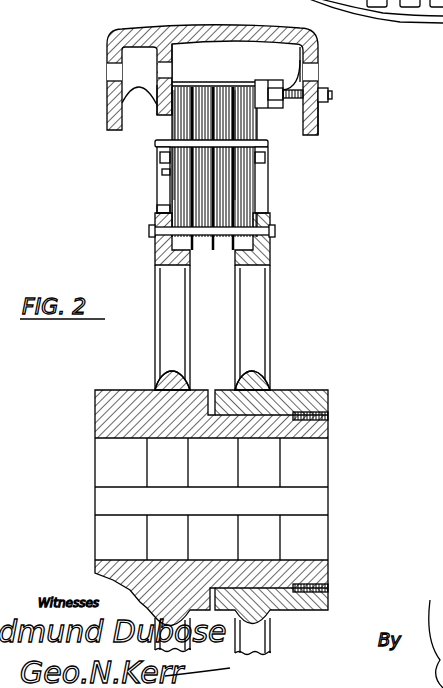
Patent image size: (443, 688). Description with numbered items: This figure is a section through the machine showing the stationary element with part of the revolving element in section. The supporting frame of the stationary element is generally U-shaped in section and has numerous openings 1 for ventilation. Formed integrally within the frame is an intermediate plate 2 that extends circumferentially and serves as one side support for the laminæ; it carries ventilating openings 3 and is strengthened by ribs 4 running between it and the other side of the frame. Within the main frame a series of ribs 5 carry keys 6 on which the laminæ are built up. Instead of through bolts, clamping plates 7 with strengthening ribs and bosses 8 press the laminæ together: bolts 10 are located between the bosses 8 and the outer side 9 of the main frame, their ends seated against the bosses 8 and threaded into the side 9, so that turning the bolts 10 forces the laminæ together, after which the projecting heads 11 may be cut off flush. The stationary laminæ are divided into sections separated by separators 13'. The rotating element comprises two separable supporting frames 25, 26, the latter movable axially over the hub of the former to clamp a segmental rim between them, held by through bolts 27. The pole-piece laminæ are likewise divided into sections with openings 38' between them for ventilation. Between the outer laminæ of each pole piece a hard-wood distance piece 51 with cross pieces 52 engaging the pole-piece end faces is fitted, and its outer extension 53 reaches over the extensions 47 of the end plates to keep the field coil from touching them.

The openings 1 is at (107, 72).
The intermediate plate 2 is at (160, 100).
The ventilating openings 3 is at (163, 70).
The ribs 4 is at (130, 80).
The ribs 5 is at (200, 44).
The keys 6 is at (221, 83).
The clamping plates 7 is at (258, 107).
The bosses 8 is at (281, 92).
The outer side of the main frame 9 is at (319, 118).
The bolts 10 is at (318, 50).
The projecting heads 11 is at (332, 96).
The separators 13' is at (142, 145).
The supporting frame 25 is at (168, 347).
The supporting frame 26 is at (253, 345).
The through bolts 27 is at (172, 232).
The openings 38' is at (273, 145).
The extension 47 is at (268, 153).
The distance piece 51 is at (160, 190).
The cross pieces 52 is at (163, 172).
The outer extension 53 is at (162, 157).